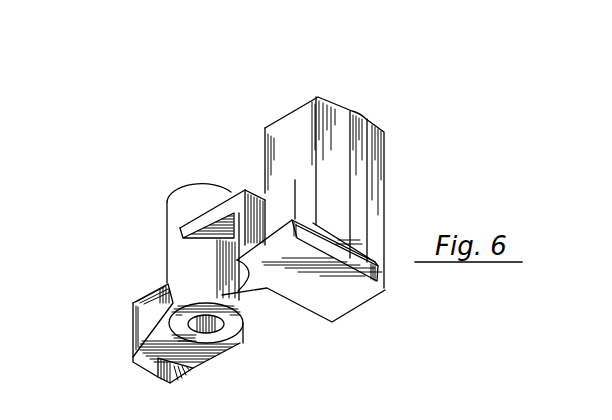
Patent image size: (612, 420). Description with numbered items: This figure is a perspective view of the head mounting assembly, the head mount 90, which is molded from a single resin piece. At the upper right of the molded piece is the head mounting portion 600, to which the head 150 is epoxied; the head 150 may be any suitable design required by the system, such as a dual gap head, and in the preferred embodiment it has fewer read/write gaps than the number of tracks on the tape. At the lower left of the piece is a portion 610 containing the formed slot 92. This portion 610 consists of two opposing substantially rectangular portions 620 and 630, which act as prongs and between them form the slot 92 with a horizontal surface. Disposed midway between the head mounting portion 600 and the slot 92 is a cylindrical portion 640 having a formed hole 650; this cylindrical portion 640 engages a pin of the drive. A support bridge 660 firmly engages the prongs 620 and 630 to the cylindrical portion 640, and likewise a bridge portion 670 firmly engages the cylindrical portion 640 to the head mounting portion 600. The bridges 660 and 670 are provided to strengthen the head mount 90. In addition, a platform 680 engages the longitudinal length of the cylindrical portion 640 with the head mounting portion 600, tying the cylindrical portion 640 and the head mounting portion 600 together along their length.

The head 150 is at (297, 147).
The head mounting portion 600 is at (345, 292).
The portion containing the formed slot 610 is at (147, 299).
The rectangular portion 620 is at (193, 366).
The rectangular portion 630 is at (132, 326).
The cylindrical portion 640 is at (193, 183).
The formed hole 650 is at (213, 327).
The support bridge 660 is at (158, 297).
The bridge portion 670 is at (212, 203).
The platform 680 is at (239, 283).
The head mount 90 is at (325, 340).
The slot 92 is at (150, 377).